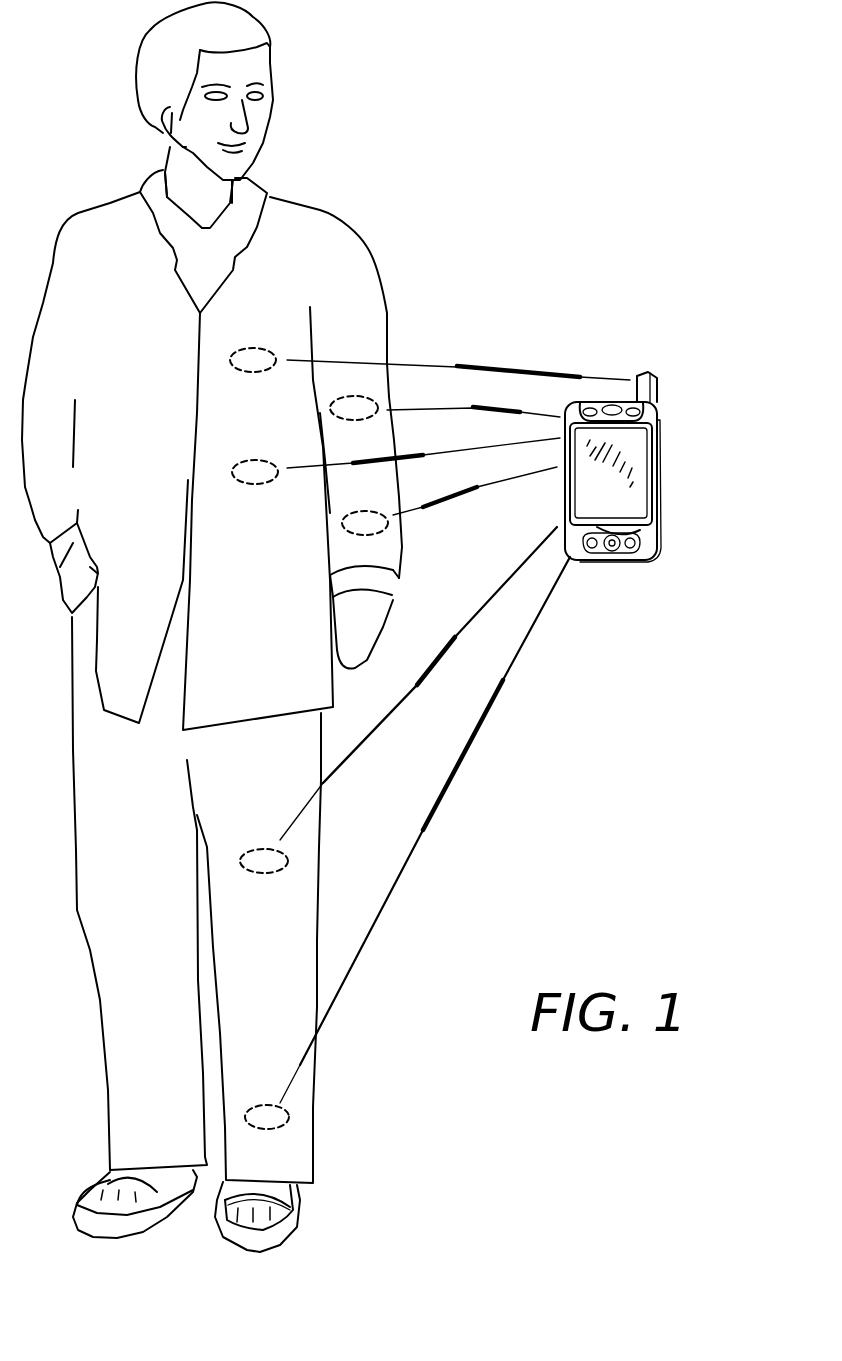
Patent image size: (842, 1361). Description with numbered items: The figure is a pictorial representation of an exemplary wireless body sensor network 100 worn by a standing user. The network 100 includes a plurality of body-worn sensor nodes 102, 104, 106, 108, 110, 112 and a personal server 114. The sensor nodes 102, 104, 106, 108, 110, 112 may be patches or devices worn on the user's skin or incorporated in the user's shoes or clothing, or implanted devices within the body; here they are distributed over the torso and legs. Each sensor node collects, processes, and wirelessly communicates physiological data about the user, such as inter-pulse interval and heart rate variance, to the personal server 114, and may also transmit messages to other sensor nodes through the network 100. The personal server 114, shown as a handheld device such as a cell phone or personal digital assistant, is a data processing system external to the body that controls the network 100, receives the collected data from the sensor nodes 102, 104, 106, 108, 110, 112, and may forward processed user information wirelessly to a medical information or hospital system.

The wireless body sensor network 100 is at (485, 120).
The sensor node 102 is at (253, 347).
The sensor node 104 is at (330, 410).
The sensor node 106 is at (233, 470).
The sensor node 108 is at (340, 523).
The sensor node 110 is at (287, 867).
The sensor node 112 is at (293, 1117).
The personal server 114 is at (660, 467).